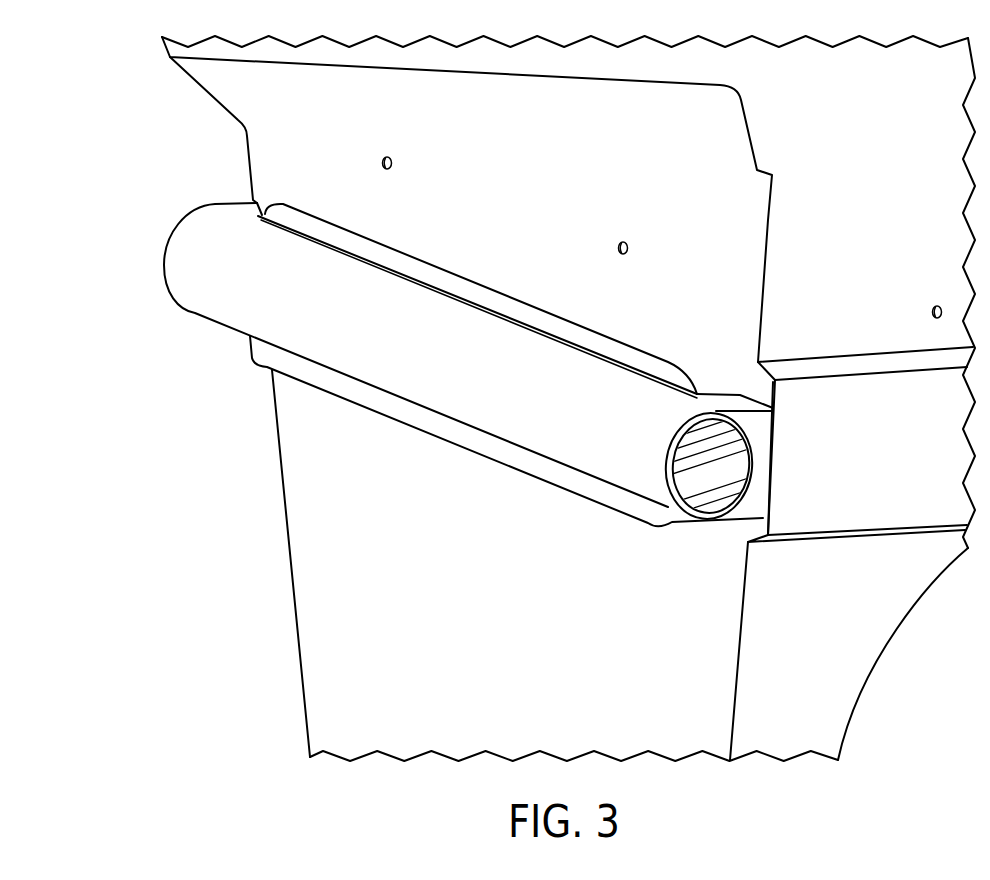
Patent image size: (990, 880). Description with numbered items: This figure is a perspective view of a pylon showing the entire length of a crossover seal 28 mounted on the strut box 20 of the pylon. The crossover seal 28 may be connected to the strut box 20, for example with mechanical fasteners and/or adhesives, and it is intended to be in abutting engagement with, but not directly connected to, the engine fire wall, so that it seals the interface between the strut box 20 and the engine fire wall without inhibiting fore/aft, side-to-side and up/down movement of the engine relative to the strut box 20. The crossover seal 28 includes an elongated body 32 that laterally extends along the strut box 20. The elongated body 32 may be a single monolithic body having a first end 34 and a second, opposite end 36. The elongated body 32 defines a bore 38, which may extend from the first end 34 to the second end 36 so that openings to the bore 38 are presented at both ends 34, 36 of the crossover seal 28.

The strut box 20 is at (590, 93).
The crossover seal 28 is at (492, 332).
The elongated body 32 is at (553, 430).
The first end 34 is at (800, 438).
The second end 36 is at (148, 220).
The bore 38 is at (733, 478).